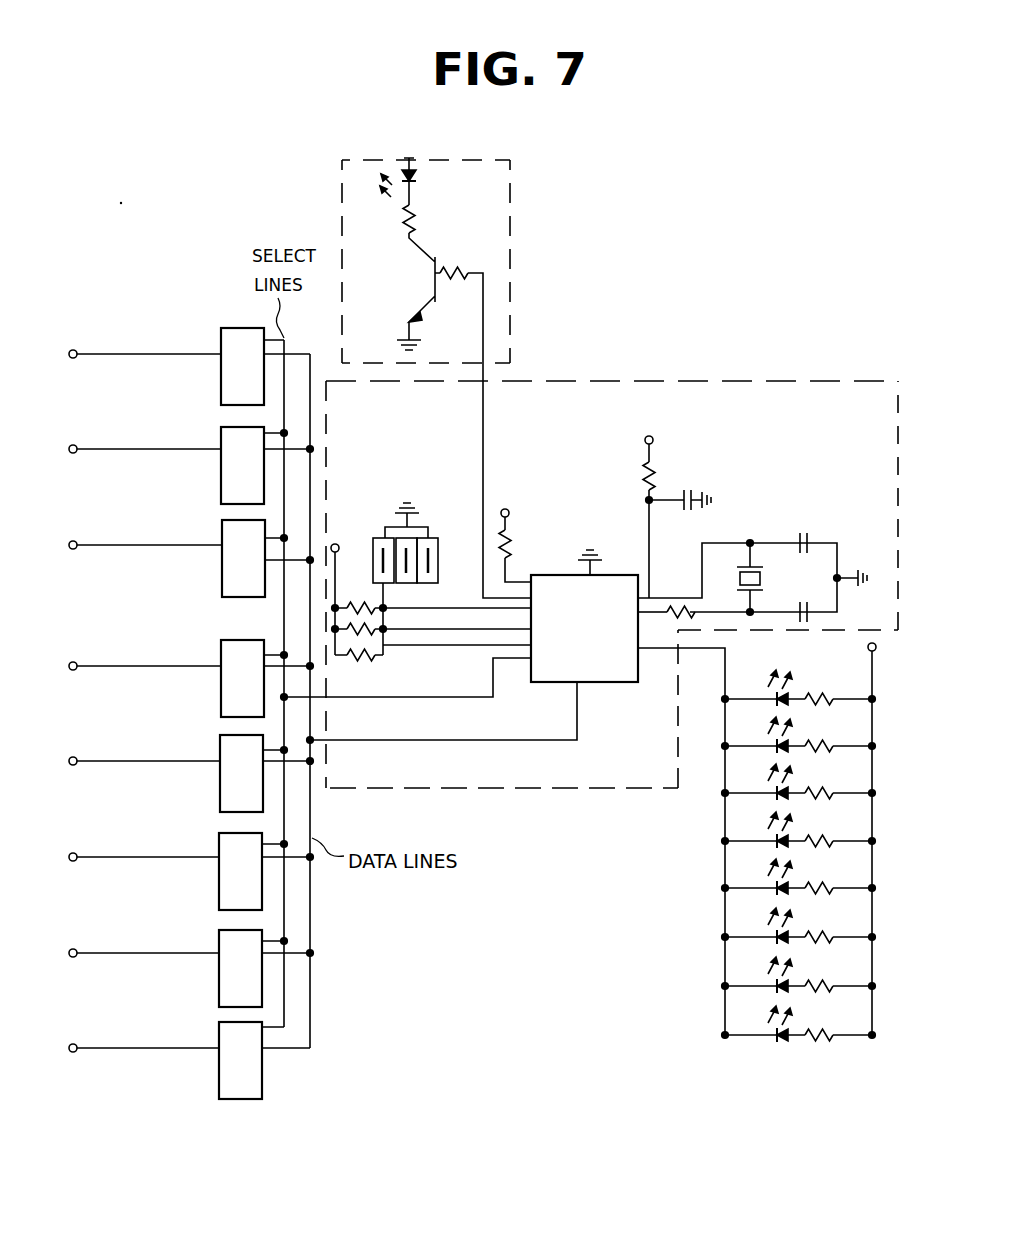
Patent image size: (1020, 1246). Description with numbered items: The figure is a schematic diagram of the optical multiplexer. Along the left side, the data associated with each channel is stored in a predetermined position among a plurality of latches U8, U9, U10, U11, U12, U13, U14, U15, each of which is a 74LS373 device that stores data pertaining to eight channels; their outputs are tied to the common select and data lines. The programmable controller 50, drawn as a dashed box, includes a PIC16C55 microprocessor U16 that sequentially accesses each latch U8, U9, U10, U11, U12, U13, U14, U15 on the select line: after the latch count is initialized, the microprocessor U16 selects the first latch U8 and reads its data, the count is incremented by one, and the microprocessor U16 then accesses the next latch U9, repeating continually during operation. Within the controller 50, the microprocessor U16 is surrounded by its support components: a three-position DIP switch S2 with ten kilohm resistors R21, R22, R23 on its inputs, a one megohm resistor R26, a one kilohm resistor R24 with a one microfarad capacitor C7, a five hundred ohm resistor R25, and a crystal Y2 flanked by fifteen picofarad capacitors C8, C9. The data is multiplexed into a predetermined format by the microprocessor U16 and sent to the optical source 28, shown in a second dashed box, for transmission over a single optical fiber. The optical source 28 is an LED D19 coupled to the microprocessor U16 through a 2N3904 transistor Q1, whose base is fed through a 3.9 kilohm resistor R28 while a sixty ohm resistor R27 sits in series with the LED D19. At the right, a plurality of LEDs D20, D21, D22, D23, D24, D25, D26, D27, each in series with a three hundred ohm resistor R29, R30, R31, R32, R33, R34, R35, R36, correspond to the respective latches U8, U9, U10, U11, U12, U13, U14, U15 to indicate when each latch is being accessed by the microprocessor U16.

The optical source 28 is at (451, 269).
The programmable controller 50 is at (565, 564).
The latch U8 is at (189, 366).
The latch U9 is at (189, 465).
The latch U10 is at (189, 558).
The latch U11 is at (189, 678).
The latch U12 is at (189, 773).
The latch U13 is at (189, 871).
The latch U14 is at (189, 968).
The latch U15 is at (189, 1060).
The microprocessor U16 is at (584, 616).
The LED D19 is at (421, 181).
The resistor R27 is at (389, 217).
The resistor R28 is at (459, 310).
The transistor Q1 is at (416, 291).
The switch S2 is at (425, 555).
The resistor R21 is at (433, 599).
The resistor R22 is at (335, 628).
The resistor R23 is at (433, 665).
The resistor R24 is at (627, 517).
The resistor R25 is at (666, 600).
The resistor R26 is at (522, 545).
The capacitor C7 is at (680, 514).
The capacitor C8 is at (803, 533).
The capacitor C9 is at (805, 601).
The crystal Y2 is at (734, 577).
The LED D20 is at (799, 688).
The LED D21 is at (799, 735).
The LED D22 is at (799, 782).
The LED D23 is at (799, 830).
The LED D24 is at (799, 877).
The LED D25 is at (799, 926).
The LED D26 is at (799, 975).
The LED D27 is at (799, 1024).
The resistor R29 is at (834, 689).
The resistor R30 is at (834, 736).
The resistor R31 is at (834, 783).
The resistor R32 is at (834, 831).
The resistor R33 is at (834, 878).
The resistor R34 is at (834, 927).
The resistor R35 is at (834, 976).
The resistor R36 is at (834, 1025).